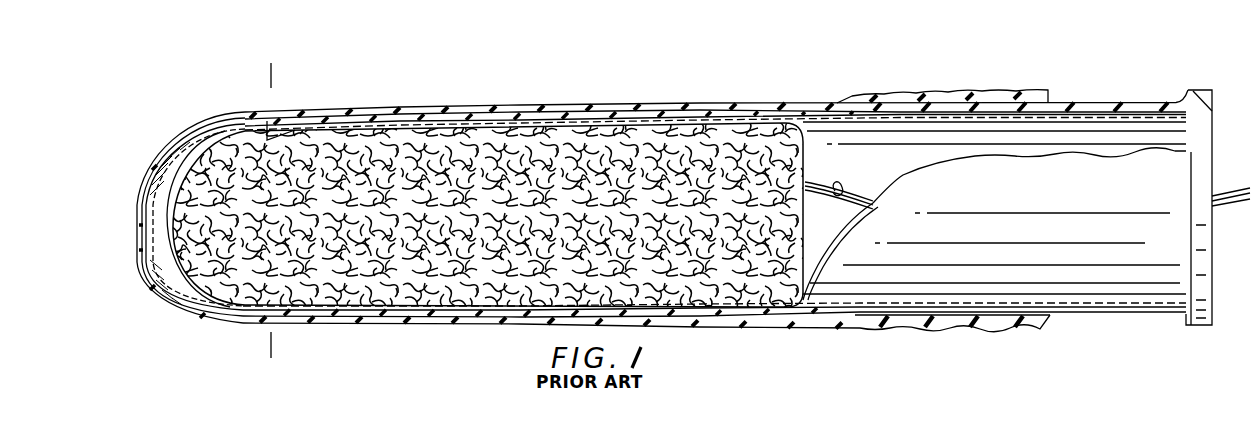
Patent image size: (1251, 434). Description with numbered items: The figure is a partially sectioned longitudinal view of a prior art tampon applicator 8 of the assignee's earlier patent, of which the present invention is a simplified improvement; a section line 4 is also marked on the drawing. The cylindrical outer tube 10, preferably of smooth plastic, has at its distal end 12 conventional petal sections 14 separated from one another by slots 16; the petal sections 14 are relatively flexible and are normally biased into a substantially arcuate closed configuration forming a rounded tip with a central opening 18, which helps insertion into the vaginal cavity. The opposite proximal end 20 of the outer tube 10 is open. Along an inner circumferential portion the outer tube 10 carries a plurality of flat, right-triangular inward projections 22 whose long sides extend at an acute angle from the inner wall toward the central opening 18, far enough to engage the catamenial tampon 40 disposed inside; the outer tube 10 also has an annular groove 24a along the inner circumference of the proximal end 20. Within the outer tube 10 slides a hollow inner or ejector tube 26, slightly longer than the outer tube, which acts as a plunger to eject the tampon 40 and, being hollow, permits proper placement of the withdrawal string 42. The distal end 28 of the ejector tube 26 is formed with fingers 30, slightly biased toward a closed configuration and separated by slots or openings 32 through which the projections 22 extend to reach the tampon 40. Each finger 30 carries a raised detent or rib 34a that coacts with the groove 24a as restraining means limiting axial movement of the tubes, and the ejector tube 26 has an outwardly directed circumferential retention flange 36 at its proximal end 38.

The section line 4- 4 is at (263, 80).
The tampon applicator 8 is at (816, 78).
The outer tube 10 is at (692, 104).
The distal end 12 is at (199, 333).
The petal sections 14 is at (174, 310).
The slots 16 is at (167, 173).
The central opening 18 is at (133, 196).
The proximal end 20 is at (1078, 84).
The inward projections 22 is at (280, 120).
The annular groove 24a is at (1022, 101).
The ejector tube 26 is at (728, 113).
The distal end 28 is at (182, 292).
The fingers 30 is at (191, 138).
The slots or openings 32 is at (418, 114).
The raised detent or rib 34a is at (363, 325).
The retention flange 36 is at (1188, 92).
The proximal end 38 is at (1221, 302).
The catamenial tampon 40 is at (468, 330).
The withdrawal string 42 is at (853, 200).